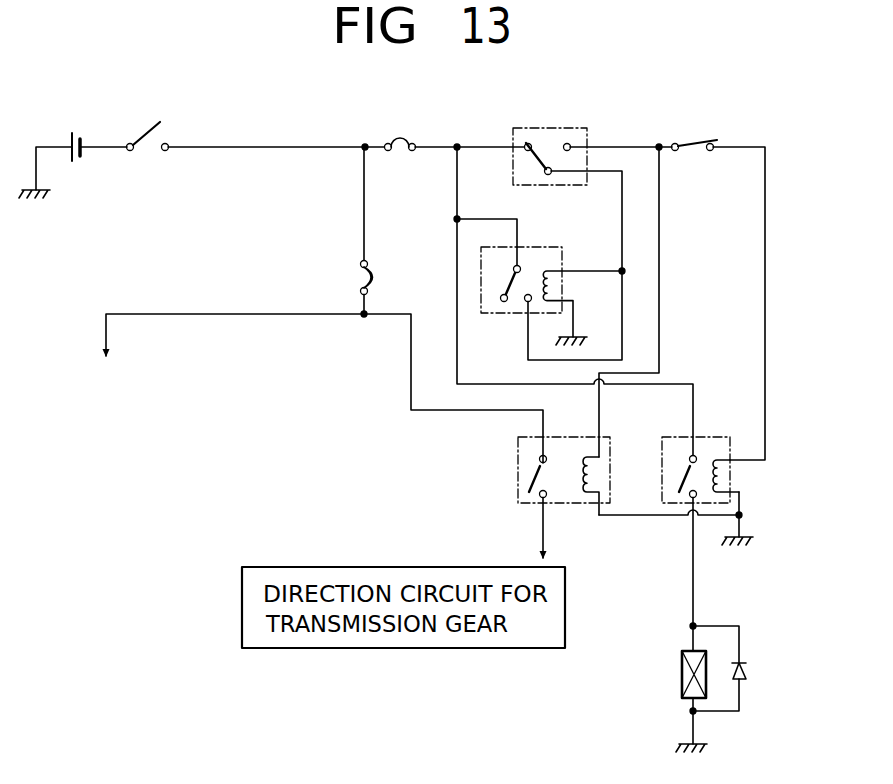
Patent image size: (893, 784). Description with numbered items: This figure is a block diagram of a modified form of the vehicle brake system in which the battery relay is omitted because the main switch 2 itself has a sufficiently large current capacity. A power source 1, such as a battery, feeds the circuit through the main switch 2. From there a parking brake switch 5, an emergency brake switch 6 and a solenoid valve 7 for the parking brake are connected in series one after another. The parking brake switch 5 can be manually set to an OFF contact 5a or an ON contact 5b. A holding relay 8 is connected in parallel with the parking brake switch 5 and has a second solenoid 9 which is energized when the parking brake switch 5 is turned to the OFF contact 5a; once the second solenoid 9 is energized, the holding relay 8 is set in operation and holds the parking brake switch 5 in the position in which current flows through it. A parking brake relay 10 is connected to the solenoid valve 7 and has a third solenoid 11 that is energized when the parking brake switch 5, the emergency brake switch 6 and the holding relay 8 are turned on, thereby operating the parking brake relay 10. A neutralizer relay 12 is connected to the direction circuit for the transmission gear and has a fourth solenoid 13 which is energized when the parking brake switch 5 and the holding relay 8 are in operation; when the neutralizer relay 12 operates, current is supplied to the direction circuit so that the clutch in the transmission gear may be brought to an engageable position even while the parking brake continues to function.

The power source 1 is at (75, 124).
The main switch 2 is at (144, 156).
The parking brake switch 5 is at (538, 126).
The OFF contact 5a is at (530, 142).
The ON contact 5b is at (566, 142).
The emergency brake switch 6 is at (689, 139).
The solenoid valve 7 is at (680, 673).
The holding relay 8 is at (500, 316).
The second solenoid 9 is at (541, 268).
The parking brake relay 10 is at (718, 431).
The third solenoid 11 is at (726, 472).
The neutralizer relay 12 is at (515, 475).
The fourth solenoid 13 is at (582, 488).